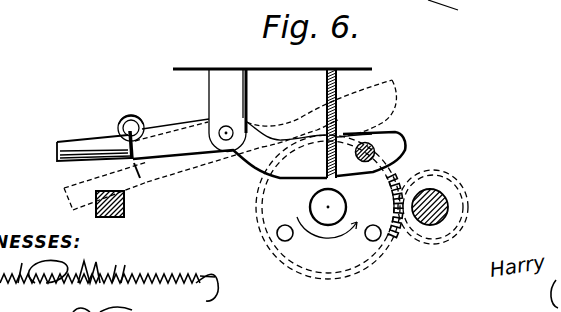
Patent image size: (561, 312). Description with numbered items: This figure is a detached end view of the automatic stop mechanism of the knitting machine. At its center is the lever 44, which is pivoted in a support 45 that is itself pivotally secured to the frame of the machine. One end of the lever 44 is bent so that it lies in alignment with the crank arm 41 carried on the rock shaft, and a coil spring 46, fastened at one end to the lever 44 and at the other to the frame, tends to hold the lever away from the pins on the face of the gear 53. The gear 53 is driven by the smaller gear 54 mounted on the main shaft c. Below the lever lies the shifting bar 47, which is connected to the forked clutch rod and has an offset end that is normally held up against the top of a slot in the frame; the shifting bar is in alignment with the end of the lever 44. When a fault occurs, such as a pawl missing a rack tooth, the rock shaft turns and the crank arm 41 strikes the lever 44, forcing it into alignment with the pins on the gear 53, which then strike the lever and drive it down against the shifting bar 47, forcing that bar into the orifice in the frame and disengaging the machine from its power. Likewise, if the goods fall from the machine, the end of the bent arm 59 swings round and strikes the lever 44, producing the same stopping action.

The crank arm 41 is at (338, 86).
The lever 44 is at (168, 128).
The support 45 is at (228, 107).
The coil spring 46 is at (128, 120).
The shifting bar 47 is at (125, 206).
The gear 53 is at (320, 275).
The gear on main shaft 54 is at (450, 180).
The arm 59 is at (372, 144).
The main shaft c is at (448, 202).